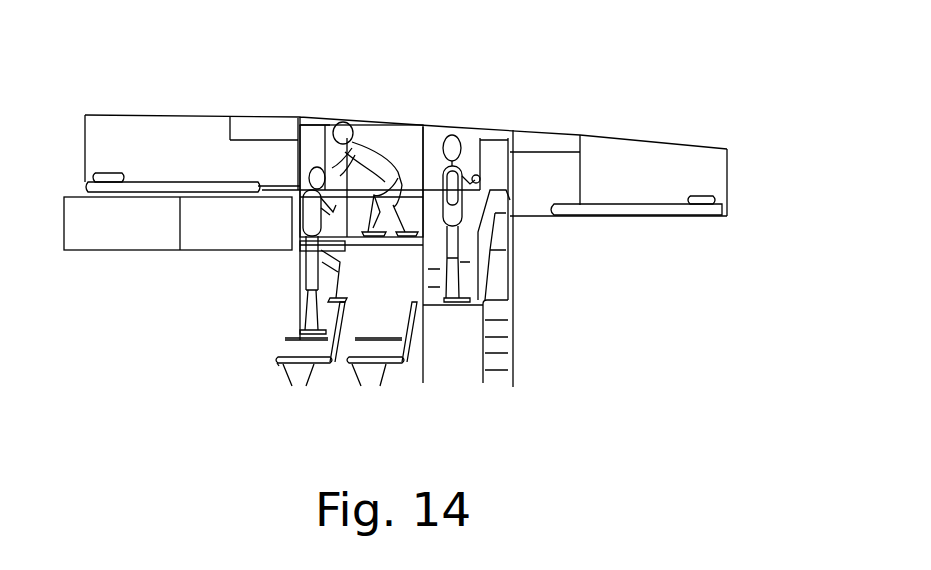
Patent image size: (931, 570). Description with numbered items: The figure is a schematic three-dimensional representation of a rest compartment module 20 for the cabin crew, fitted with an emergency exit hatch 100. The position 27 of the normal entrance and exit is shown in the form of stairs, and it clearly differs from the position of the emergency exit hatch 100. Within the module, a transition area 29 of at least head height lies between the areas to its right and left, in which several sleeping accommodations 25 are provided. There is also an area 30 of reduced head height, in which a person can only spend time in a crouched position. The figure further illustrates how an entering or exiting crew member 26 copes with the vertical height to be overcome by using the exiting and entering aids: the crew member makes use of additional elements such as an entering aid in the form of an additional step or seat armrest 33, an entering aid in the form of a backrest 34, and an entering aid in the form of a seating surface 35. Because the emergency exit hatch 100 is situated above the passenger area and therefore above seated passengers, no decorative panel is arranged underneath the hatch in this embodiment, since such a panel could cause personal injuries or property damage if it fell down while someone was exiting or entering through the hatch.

The rest compartment module with emergency exit hatch for cabin crew 20 is at (762, 148).
The berth/sleeping accommodations 25 is at (170, 164).
The entering crew member 26 is at (284, 263).
The position of normal entrance and exit 27 is at (434, 298).
The transition area with at least head height 29 is at (468, 128).
The area with walk/catwalk 30 is at (378, 128).
The entering aid in the form of an additional step/armrest of seat 33 is at (274, 345).
The entering aid in the form of a backrest 34 is at (338, 354).
The entering aid in the form of a seating surface 35 is at (288, 358).
The emergency exit hatch 100 is at (345, 250).